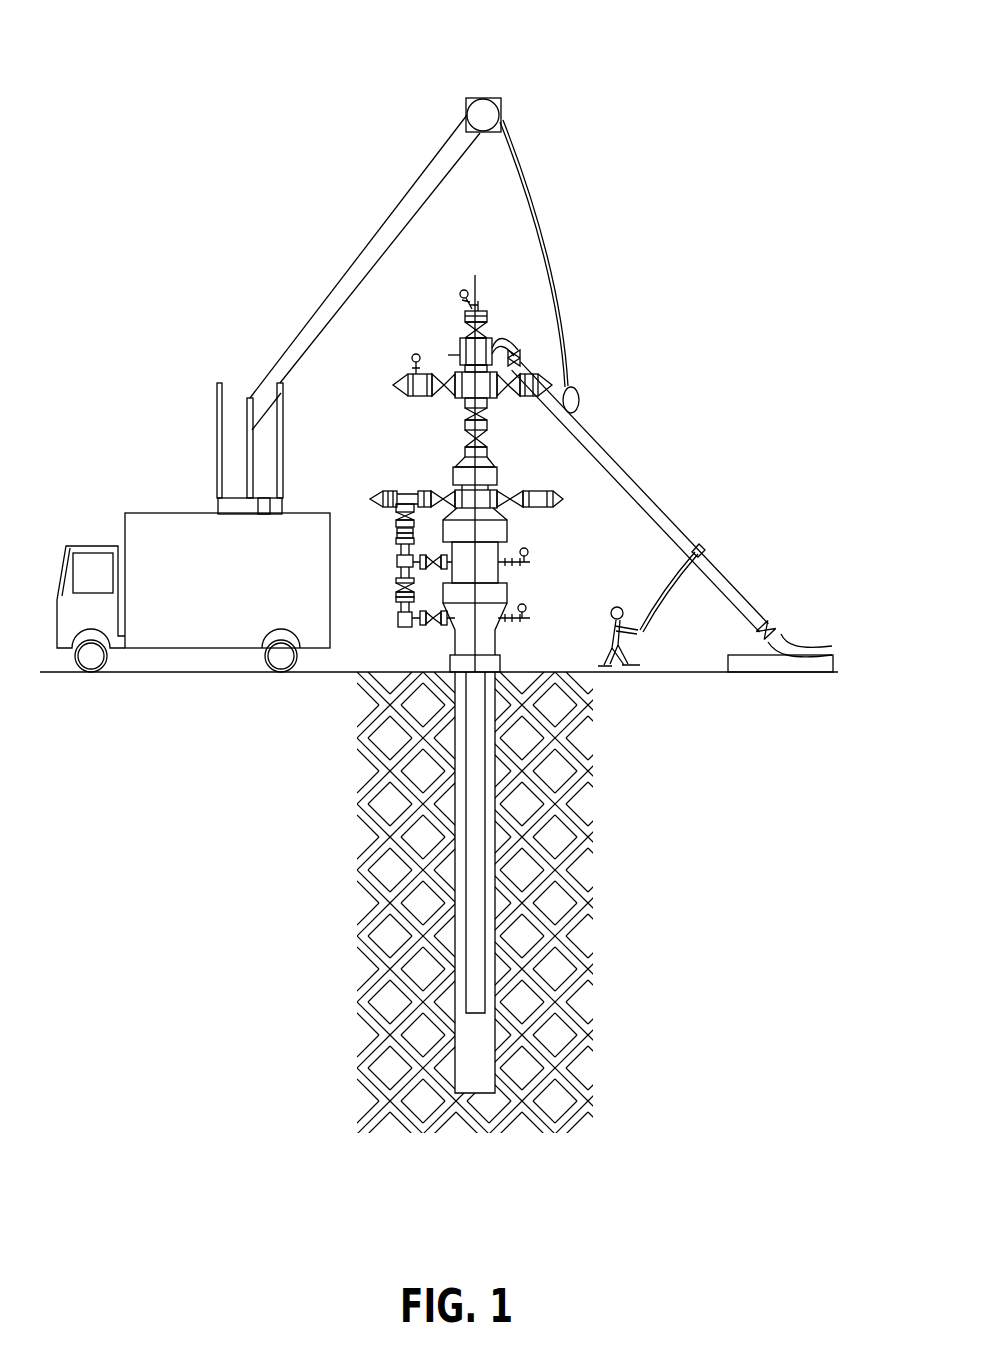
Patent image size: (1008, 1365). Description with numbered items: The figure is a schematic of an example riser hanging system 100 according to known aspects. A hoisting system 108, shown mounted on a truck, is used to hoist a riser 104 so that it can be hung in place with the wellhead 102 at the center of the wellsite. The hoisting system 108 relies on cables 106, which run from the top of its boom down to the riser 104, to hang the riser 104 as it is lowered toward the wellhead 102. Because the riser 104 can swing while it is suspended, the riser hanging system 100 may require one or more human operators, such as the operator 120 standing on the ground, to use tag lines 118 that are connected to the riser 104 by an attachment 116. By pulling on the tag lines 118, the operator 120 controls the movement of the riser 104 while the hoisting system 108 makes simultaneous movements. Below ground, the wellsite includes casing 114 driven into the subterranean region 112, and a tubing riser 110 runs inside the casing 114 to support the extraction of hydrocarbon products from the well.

The riser hanging system 100 is at (830, 110).
The wellhead 102 is at (447, 337).
The riser 104 is at (617, 450).
The cables 106 is at (549, 241).
The hoisting system 108 is at (145, 507).
The tubing riser 110 is at (470, 877).
The subterranean region 112 is at (358, 778).
The casing 114 is at (457, 988).
The attachment 116 is at (703, 548).
The tag lines 118 is at (667, 587).
The operator 120 is at (610, 593).